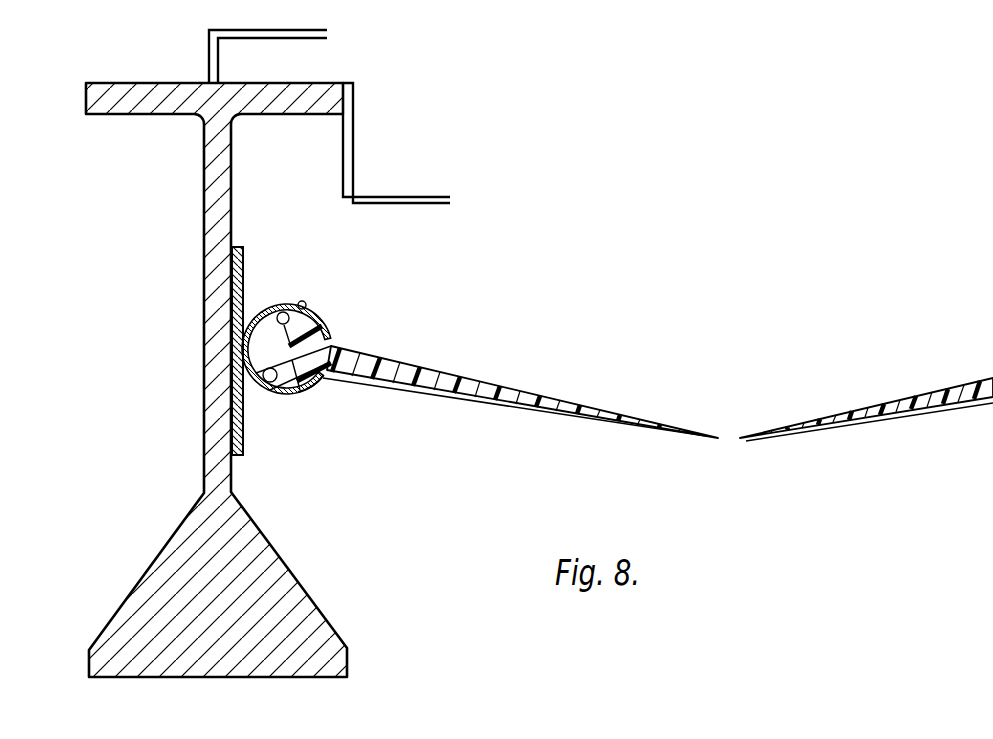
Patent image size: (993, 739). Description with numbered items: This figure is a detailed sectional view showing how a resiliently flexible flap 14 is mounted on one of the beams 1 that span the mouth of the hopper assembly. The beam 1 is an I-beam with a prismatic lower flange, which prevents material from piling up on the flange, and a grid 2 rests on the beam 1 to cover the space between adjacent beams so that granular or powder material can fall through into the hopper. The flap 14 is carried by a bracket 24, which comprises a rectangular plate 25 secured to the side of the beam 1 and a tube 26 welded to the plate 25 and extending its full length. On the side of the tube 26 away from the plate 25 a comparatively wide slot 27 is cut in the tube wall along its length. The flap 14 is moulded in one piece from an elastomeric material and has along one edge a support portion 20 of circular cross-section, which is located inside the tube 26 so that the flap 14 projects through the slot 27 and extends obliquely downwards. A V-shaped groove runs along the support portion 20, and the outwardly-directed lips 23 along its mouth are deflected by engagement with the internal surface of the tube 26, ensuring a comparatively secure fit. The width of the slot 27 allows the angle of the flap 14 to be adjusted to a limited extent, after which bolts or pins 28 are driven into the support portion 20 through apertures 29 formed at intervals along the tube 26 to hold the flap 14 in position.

The beam 1 is at (123, 93).
The grid 2 is at (209, 47).
The resiliently flexible flap 14 is at (543, 398).
The support portion 20 is at (292, 365).
The lip 23 is at (285, 312).
The bracket 24 is at (252, 257).
The rectangular plate 25 is at (233, 357).
The tube 26 is at (324, 382).
The slot 27 is at (342, 333).
The bolts or pins 28 is at (314, 306).
The aperture 29 is at (303, 301).